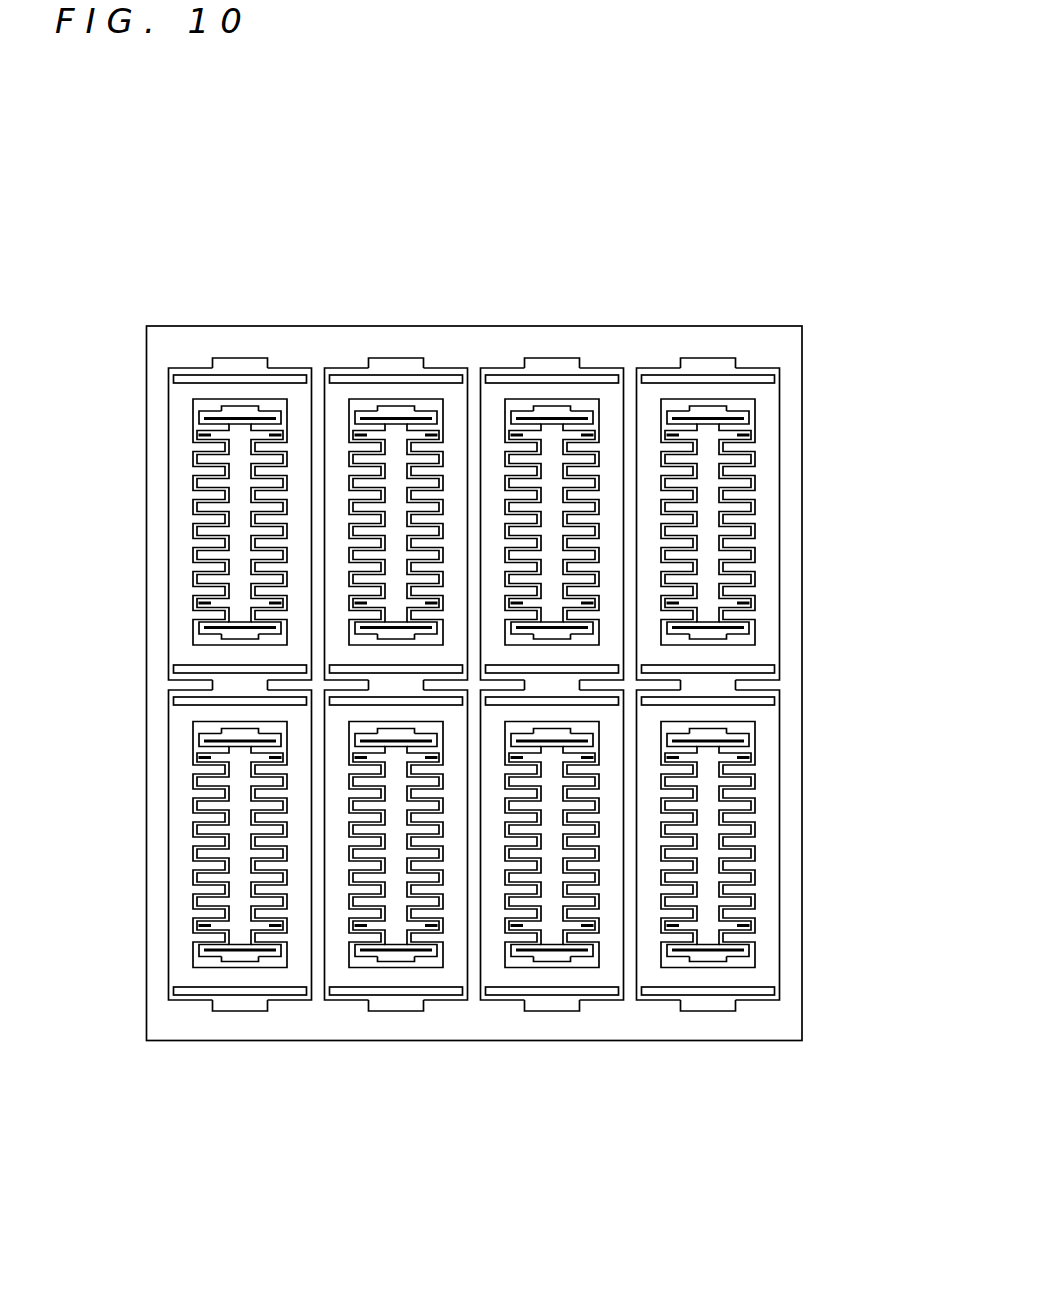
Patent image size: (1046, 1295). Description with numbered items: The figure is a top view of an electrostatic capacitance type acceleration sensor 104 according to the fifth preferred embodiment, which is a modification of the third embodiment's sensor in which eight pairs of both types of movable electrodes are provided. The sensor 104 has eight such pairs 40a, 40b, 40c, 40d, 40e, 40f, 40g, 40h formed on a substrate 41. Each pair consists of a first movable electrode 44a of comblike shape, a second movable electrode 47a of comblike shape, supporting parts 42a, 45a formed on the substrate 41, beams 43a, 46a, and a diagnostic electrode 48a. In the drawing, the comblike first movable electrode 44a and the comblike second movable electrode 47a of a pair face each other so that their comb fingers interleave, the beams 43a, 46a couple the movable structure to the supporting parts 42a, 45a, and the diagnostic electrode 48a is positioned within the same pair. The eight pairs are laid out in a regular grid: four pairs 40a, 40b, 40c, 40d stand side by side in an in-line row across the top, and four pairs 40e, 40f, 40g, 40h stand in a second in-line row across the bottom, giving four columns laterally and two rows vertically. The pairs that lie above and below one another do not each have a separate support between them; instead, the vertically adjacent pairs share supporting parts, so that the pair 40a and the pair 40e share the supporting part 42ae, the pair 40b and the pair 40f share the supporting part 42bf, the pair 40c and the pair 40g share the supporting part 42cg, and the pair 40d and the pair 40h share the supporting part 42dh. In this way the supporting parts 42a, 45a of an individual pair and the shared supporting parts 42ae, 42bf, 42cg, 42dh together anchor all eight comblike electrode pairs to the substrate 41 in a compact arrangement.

The electrostatic capacitance type acceleration sensor 104 is at (531, 194).
The pair 40a is at (193, 447).
The pair 40b is at (396, 447).
The pair 40c is at (552, 447).
The pair 40d is at (708, 447).
The pair 40e is at (240, 920).
The pair 40f is at (396, 920).
The pair 40g is at (552, 920).
The pair 40h is at (708, 920).
The substrate 41 is at (180, 352).
The supporting part 42a is at (239, 357).
The shared supporting part 42ae is at (247, 685).
The shared supporting part 42bf is at (408, 684).
The shared supporting part 42cg is at (564, 684).
The shared supporting part 42dh is at (705, 685).
The beam 43a is at (185, 376).
The first movable electrode 44a is at (180, 485).
The supporting part 45a is at (229, 409).
The beam 46a is at (199, 428).
The second movable electrode 47a is at (240, 512).
The diagnostic electrode 48a is at (266, 434).